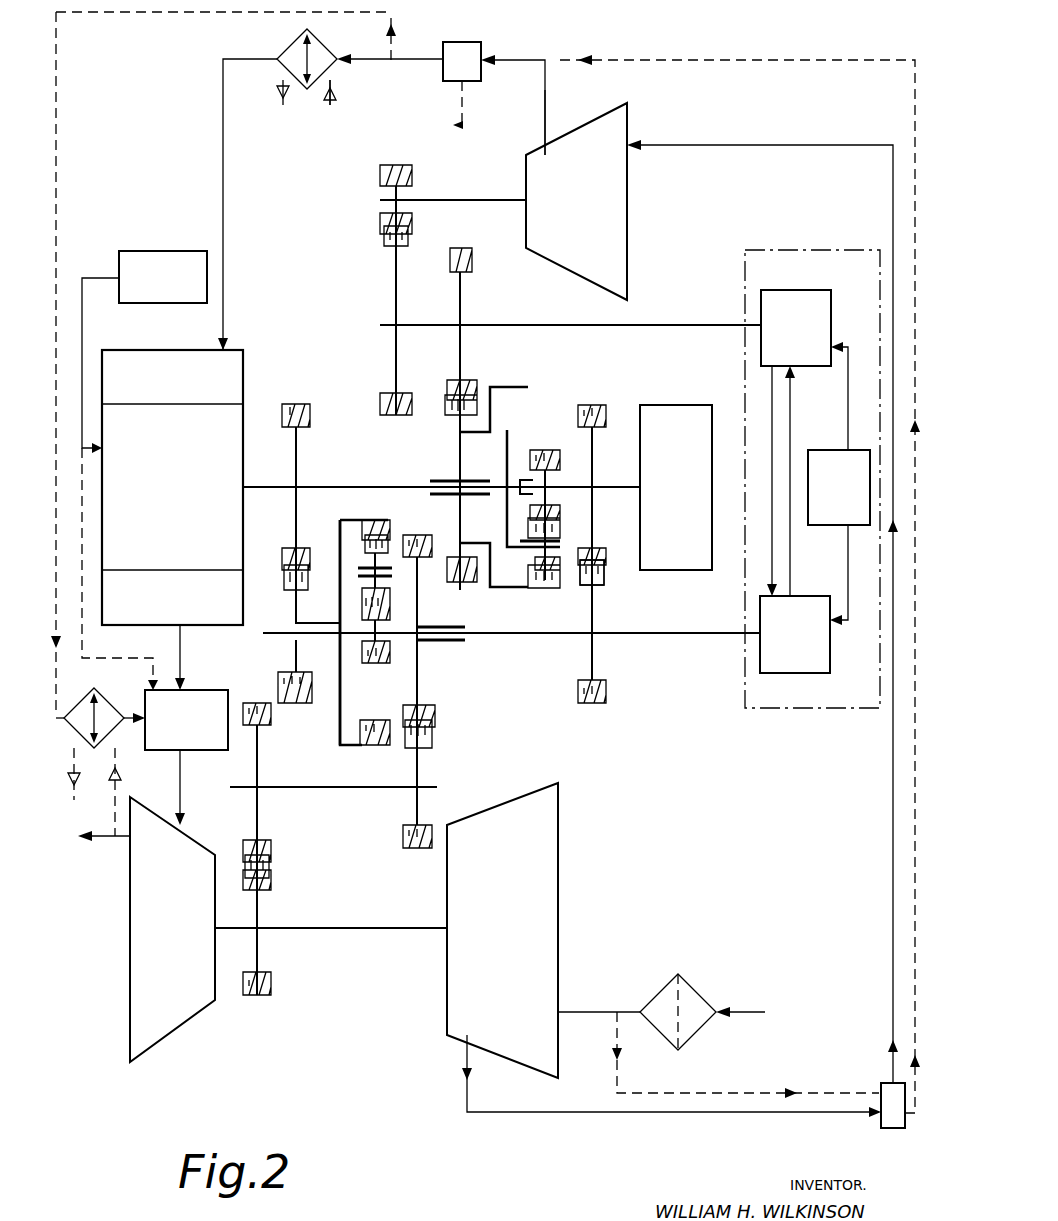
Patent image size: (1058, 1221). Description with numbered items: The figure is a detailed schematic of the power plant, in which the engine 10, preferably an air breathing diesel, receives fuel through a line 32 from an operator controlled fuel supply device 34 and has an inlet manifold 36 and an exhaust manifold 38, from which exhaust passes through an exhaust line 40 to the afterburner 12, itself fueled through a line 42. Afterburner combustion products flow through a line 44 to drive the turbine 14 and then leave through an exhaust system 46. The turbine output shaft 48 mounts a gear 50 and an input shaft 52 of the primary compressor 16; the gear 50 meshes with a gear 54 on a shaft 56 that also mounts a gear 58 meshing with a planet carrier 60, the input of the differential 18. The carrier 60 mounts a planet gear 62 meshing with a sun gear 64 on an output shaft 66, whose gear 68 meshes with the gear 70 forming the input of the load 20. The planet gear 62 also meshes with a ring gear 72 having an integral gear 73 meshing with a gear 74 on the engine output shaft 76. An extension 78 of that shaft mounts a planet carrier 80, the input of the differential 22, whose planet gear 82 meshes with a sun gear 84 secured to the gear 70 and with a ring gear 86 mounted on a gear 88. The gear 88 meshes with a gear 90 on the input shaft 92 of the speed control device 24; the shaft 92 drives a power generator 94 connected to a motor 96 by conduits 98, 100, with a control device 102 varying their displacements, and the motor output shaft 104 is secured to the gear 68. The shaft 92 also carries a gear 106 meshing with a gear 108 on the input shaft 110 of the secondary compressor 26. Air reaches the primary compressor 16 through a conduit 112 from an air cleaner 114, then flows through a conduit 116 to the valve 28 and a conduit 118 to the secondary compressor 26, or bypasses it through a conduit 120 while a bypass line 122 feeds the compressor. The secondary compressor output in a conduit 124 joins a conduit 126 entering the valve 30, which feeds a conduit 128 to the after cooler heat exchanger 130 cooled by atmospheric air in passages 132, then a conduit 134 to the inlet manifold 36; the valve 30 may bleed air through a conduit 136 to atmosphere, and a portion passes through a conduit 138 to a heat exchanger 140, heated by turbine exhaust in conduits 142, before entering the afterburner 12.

The engine 10 is at (243, 440).
The afterburner 12 is at (205, 702).
The exhaust driven turbine 14 is at (130, 1003).
The primary compressor 16 is at (560, 860).
The differential 18 is at (448, 638).
The load 20 is at (680, 405).
The differential 22 is at (430, 471).
The speed control device 24 is at (745, 700).
The secondary compressor 26 is at (610, 135).
The valve 28 is at (888, 1090).
The valve 30 is at (465, 50).
The fuel line 32 is at (88, 278).
The fuel supply device 34 is at (152, 251).
The inlet manifold 36 is at (160, 350).
The exhaust manifold 38 is at (228, 602).
The exhaust line 40 is at (182, 648).
The fuel line 42 is at (104, 658).
The line 44 is at (182, 800).
The exhaust system 46 is at (85, 840).
The output shaft 48 is at (248, 928).
The gear 50 is at (272, 882).
The input shaft 52 is at (378, 930).
The gear 54 is at (272, 840).
The shaft 56 is at (328, 787).
The gear 58 is at (435, 740).
The planet carrier 60 is at (435, 712).
The planet gear 62 is at (385, 540).
The sun gear 64 is at (385, 665).
The output shaft 66 is at (505, 633).
The gear 68 is at (605, 585).
The gear 70 is at (608, 555).
The ring gear 72 is at (340, 545).
The integral gear 73 is at (304, 623).
The gear 74 is at (290, 550).
The output shaft 76 is at (278, 487).
The extension 78 is at (335, 487).
The planet carrier 80 is at (507, 520).
The planet gear 82 is at (560, 528).
The sun gear 84 is at (548, 452).
The ring gear 86 is at (542, 590).
The gear 88 is at (458, 468).
The gear 90 is at (462, 352).
The input shaft 92 is at (563, 325).
The power generator 94 is at (810, 300).
The motor 96 is at (795, 598).
The conduit 98 is at (772, 432).
The conduit 100 is at (790, 415).
The control device 102 is at (826, 455).
The motor output shaft 104 is at (718, 634).
The gear 106 is at (384, 242).
The gear 108 is at (380, 178).
The input shaft 110 is at (440, 200).
The conduit 112 is at (597, 1012).
The air cleaner 114 is at (693, 1000).
The conduit 116 is at (625, 1112).
The conduit 118 is at (893, 895).
The conduit 120 is at (750, 58).
The bypass line 122 is at (762, 1093).
The conduit 124 is at (546, 105).
The conduit 126 is at (530, 60).
The conduit 128 is at (420, 60).
The heat exchanger 130 is at (287, 70).
The passages 132 is at (325, 105).
The conduit 134 is at (223, 168).
The conduit 136 is at (470, 97).
The conduit 138 is at (218, 20).
The heat exchanger 140 is at (105, 700).
The conduits 142 is at (118, 790).